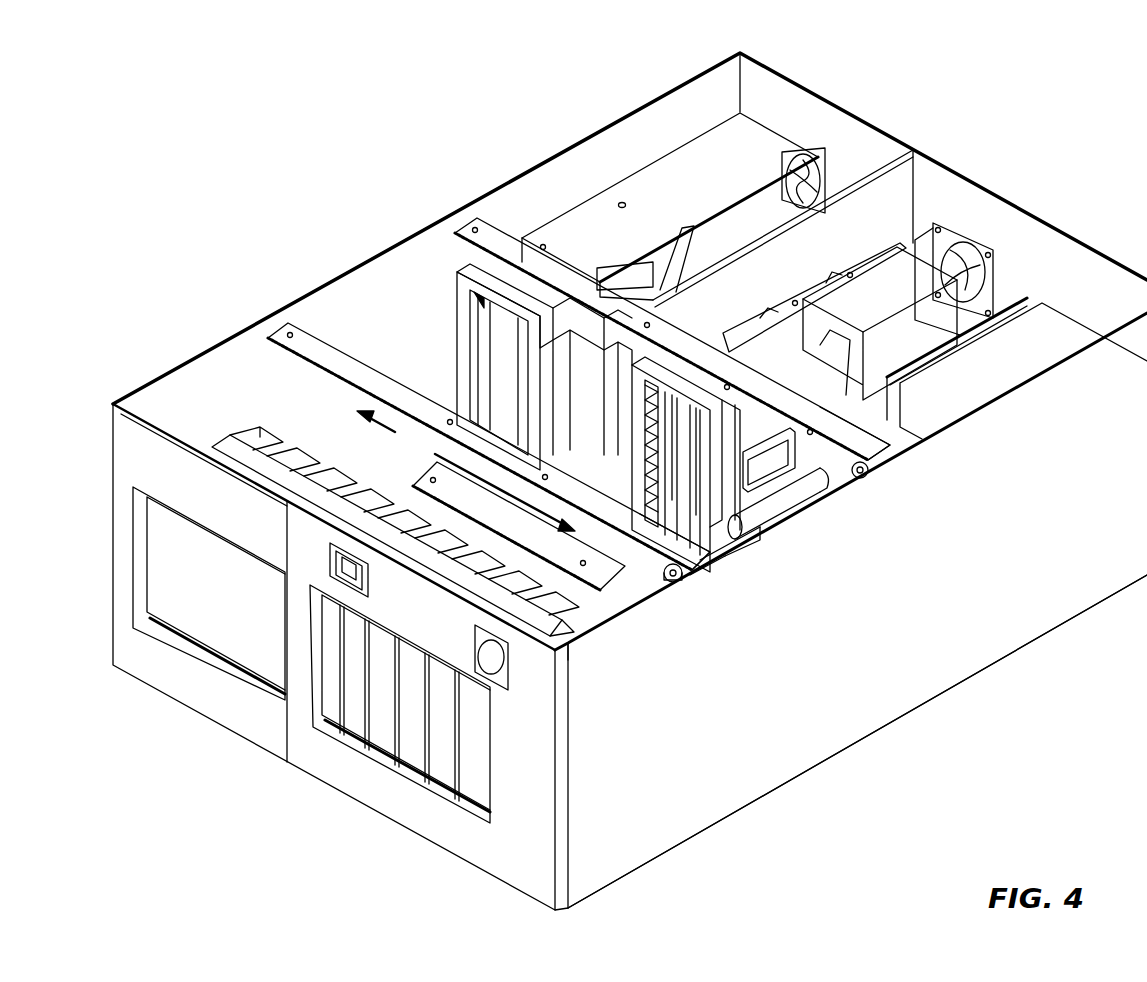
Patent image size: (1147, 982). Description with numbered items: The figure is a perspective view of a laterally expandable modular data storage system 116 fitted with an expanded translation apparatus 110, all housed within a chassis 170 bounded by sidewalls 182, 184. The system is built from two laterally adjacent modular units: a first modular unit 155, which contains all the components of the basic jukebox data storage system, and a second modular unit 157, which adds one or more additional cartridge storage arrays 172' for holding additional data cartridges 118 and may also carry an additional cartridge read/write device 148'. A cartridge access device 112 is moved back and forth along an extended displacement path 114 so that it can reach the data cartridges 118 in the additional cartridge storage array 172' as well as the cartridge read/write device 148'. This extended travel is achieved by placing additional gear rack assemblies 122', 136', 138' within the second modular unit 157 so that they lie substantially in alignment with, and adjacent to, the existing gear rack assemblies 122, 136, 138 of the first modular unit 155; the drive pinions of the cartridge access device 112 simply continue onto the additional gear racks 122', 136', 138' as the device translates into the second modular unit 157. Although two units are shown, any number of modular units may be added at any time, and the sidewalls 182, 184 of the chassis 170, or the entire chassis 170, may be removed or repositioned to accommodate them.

The expanded translation apparatus 110 is at (343, 214).
The cartridge access device 112 is at (612, 594).
The extended displacement path 114 is at (396, 431).
The laterally expandable modular data storage system 116 is at (277, 307).
The data cartridges 118 is at (330, 450).
The gear rack assembly 122 is at (704, 559).
The additional gear rack assembly 122' is at (489, 440).
The gear rack assembly 136 is at (675, 595).
The additional gear rack assembly 136' is at (492, 519).
The gear rack assembly 138 is at (882, 455).
The additional gear rack assembly 138' is at (672, 327).
The additional cartridge read/write device 148' is at (481, 367).
The first modular unit 155 is at (404, 828).
The second modular unit 157 is at (185, 705).
The chassis 170 is at (1047, 216).
The additional cartridge storage array 172' is at (387, 505).
The sidewall 182 is at (990, 650).
The sidewall 184 is at (535, 164).